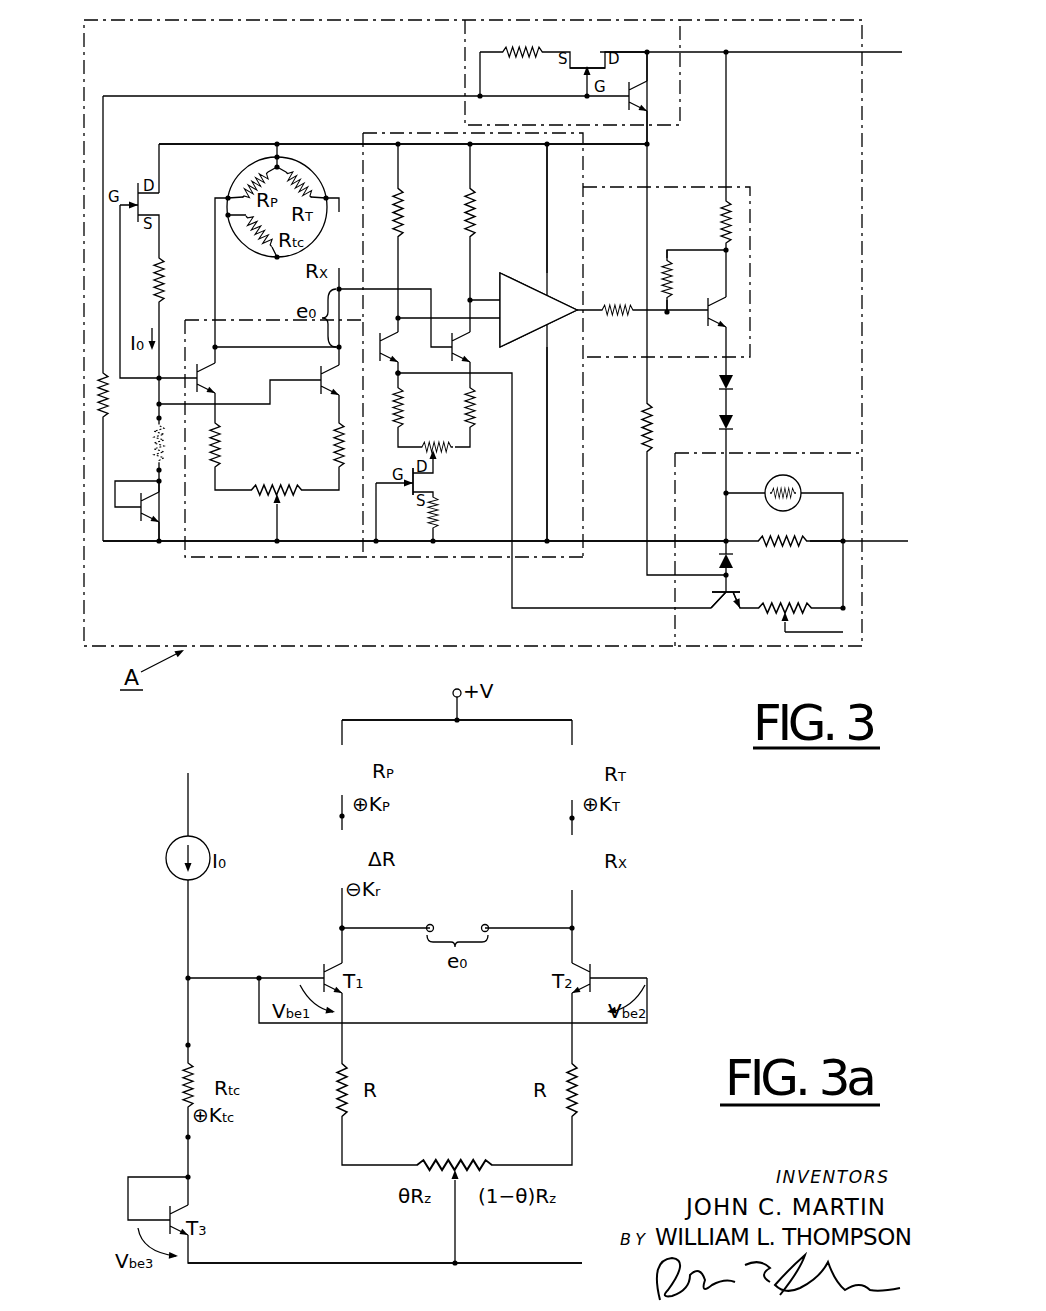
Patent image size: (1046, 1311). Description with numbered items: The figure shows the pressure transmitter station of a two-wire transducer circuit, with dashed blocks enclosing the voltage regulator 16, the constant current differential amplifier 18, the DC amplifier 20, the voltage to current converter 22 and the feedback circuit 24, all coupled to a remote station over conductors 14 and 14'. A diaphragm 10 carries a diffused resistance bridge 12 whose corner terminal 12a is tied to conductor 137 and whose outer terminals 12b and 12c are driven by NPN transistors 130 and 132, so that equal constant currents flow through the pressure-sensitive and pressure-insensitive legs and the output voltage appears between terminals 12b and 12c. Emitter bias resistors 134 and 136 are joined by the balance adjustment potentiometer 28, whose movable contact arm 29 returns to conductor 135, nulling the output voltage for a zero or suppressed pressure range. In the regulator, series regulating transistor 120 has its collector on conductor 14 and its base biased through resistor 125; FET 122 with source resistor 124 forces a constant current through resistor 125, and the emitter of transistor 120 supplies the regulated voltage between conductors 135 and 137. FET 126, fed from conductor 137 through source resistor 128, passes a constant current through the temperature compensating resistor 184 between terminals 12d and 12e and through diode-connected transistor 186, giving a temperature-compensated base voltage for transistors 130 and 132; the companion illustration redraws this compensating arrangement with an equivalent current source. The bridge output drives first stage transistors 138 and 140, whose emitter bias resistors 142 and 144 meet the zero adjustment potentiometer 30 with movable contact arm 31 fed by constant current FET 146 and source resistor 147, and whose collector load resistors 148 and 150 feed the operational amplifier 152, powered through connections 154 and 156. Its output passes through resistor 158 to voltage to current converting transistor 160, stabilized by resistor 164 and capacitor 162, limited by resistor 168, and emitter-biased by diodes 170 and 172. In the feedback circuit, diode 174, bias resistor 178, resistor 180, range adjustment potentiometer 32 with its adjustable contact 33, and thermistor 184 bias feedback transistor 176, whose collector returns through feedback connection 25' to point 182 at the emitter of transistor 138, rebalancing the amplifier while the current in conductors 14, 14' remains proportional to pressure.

In FIG. 3, the diaphragm 10 is at (226, 179).
In FIG. 3, the resistance bridge 12 is at (263, 162).
In FIG. 3, the corner terminal of the bridge 12a is at (282, 163).
In FIG. 3, the outer terminal of the bridge 12b is at (228, 197).
In FIG. 3, the outer terminal of the bridge 12c is at (328, 197).
In FIG. 3, the terminal of temperature compensating resistor Rtc 12d is at (229, 218).
In FIG. 3a, the terminal of temperature compensating resistor Rtc 12d is at (184, 1045).
In FIG. 3, the remaining terminal of temperature compensating resistor Rtc 12e is at (277, 260).
In FIG. 3a, the remaining terminal of temperature compensating resistor Rtc 12e is at (184, 1138).
In FIG. 3, the conductor 14 is at (754, 71).
In FIG. 3, the remote conductor 14' is at (861, 564).
In FIG. 3, the voltage regulator 16 is at (460, 53).
In FIG. 3, the constant current differential amplifier 18 is at (320, 565).
In FIG. 3, the DC amplifier 20 is at (368, 128).
In FIG. 3, the voltage to current converter 22 is at (760, 189).
In FIG. 3, the feedback circuit 24 is at (807, 448).
In FIG. 3, the feedback connection 25' is at (554, 496).
In FIG. 3, the balance adjustment potentiometer 28 is at (276, 486).
In FIG. 3a, the balance adjustment potentiometer 28 is at (450, 1160).
In FIG. 3, the movable contact arm 29 is at (282, 523).
In FIG. 3a, the movable contact arm 29 is at (458, 1230).
In FIG. 3, the zero adjustment potentiometer 30 is at (440, 455).
In FIG. 3, the movable contact arm 31 is at (437, 473).
In FIG. 3, the range adjustment potentiometer 32 is at (773, 612).
In FIG. 3, the potentiometer wiper 33 is at (784, 636).
In FIG. 3, the series voltage regulating transistor 120 is at (640, 108).
In FIG. 3, the field effect transistor 122 is at (593, 66).
In FIG. 3, the source resistor 124 is at (525, 60).
In FIG. 3, the biasing resistor 125 is at (108, 402).
In FIG. 3, the field effect transistor 126 is at (125, 200).
In FIG. 3a, the field effect transistor 126 is at (338, 930).
In FIG. 3, the source resistor 128 is at (165, 280).
In FIG. 3, the NPN transistor 130 is at (206, 377).
In FIG. 3a, the NPN transistor 130 is at (312, 974).
In FIG. 3, the NPN transistor 132 is at (316, 393).
In FIG. 3a, the NPN transistor 132 is at (598, 973).
In FIG. 3, the emitter bias resistor 134 is at (222, 456).
In FIG. 3a, the emitter bias resistor 134 is at (330, 1115).
In FIG. 3, the conductor 135 is at (172, 542).
In FIG. 3a, the conductor 135 is at (312, 1262).
In FIG. 3, the emitter bias resistor 136 is at (335, 450).
In FIG. 3a, the emitter bias resistor 136 is at (562, 1118).
In FIG. 3, the conductor 137 is at (218, 141).
In FIG. 3a, the conductor 137 is at (338, 735).
In FIG. 3, the first stage differential amplifier transistor 138 is at (394, 356).
In FIG. 3, the first stage differential amplifier transistor 140 is at (469, 352).
In FIG. 3, the emitter bias resistor 142 is at (408, 413).
In FIG. 3, the emitter bias resistor 144 is at (478, 412).
In FIG. 3, the field effect transistor 146 is at (408, 502).
In FIG. 3, the source resistor 147 is at (445, 520).
In FIG. 3, the collector load resistor 148 is at (404, 196).
In FIG. 3, the collector load resistor 150 is at (485, 203).
In FIG. 3, the operational amplifier 152 is at (533, 273).
In FIG. 3, the connection 154 is at (546, 184).
In FIG. 3, the connection 156 is at (549, 433).
In FIG. 3, the resistor 158 is at (633, 305).
In FIG. 3, the voltage to current converting transistor 160 is at (702, 327).
In FIG. 3, the capacitor 162 is at (692, 248).
In FIG. 3, the resistor 164 is at (673, 297).
In FIG. 3, the current limiting resistor 168 is at (735, 226).
In FIG. 3, the diode 170 is at (739, 385).
In FIG. 3, the diode 172 is at (739, 426).
In FIG. 3, the diode 174 is at (736, 562).
In FIG. 3, the feedback transistor 176 is at (722, 609).
In FIG. 3, the bias resistor 178 is at (793, 548).
In FIG. 3, the resistor 180 is at (642, 447).
In FIG. 3, the point 182 is at (403, 377).
In FIG. 3, the thermistor 184 is at (156, 446).
In FIG. 3a, the thermistor 184 is at (180, 1090).
In FIG. 3, the transistor 186 is at (134, 520).
In FIG. 3a, the transistor 186 is at (190, 1212).